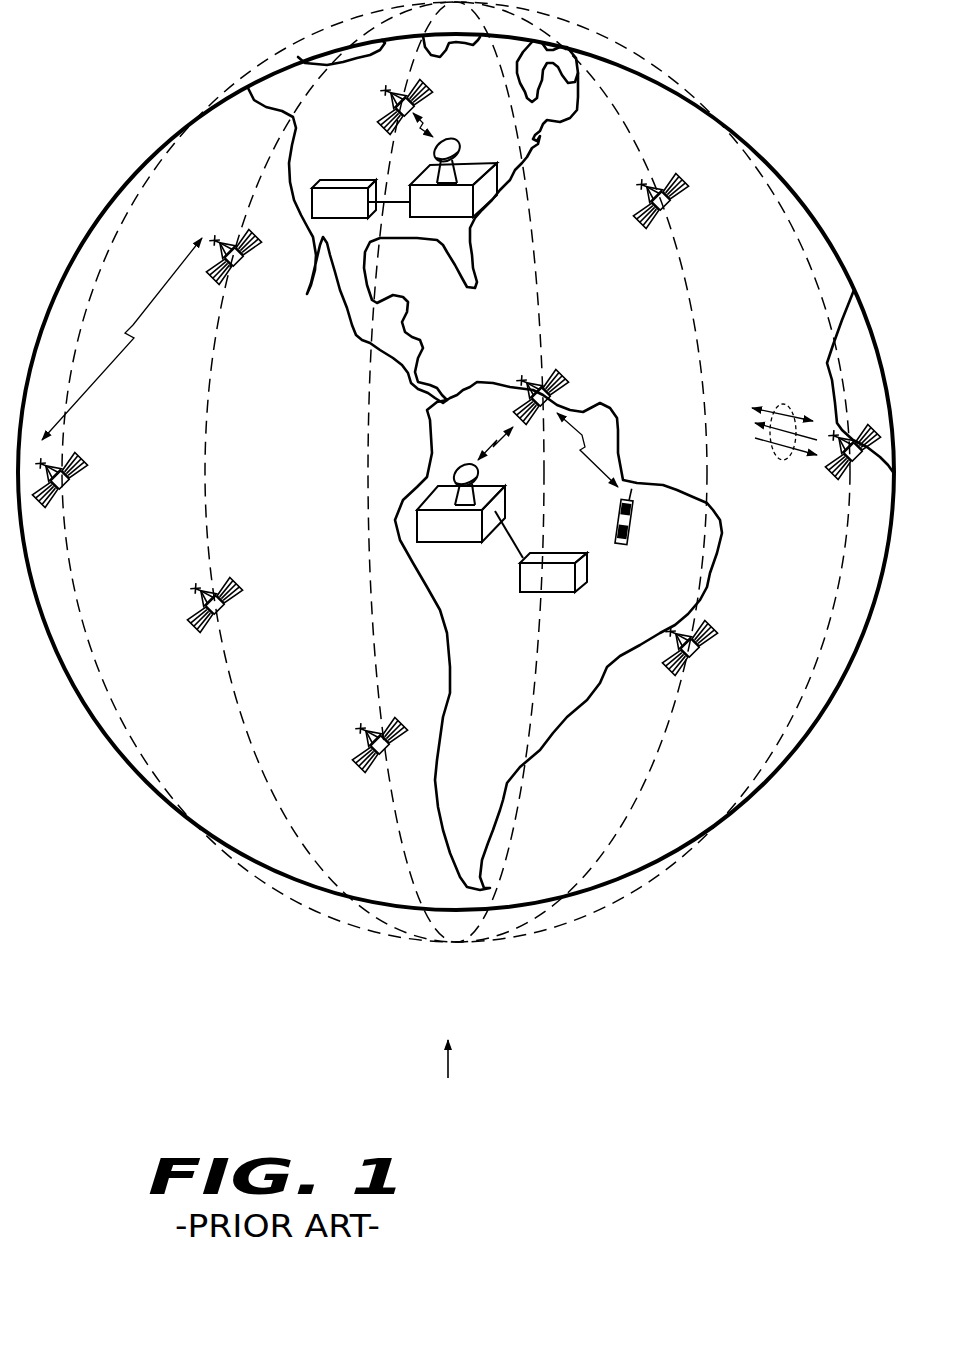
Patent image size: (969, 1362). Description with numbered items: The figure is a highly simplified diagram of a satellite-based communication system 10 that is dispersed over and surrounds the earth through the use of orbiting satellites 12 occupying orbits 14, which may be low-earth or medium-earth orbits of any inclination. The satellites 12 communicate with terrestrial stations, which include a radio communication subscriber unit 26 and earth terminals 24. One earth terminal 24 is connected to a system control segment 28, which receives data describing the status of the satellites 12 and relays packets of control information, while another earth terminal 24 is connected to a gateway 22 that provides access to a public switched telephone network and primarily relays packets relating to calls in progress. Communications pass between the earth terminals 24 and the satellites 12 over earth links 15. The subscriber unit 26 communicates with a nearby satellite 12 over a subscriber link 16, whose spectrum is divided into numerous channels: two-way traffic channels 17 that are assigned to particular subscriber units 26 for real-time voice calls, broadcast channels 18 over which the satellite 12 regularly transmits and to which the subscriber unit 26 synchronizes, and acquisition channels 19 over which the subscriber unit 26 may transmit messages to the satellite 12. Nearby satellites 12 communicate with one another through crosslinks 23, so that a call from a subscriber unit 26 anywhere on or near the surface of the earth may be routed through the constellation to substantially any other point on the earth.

The satellite-based communication system 10 is at (450, 1078).
The satellite 12 is at (385, 131).
The orbit 14 is at (265, 173).
The earth link 15 is at (492, 440).
The subscriber link 16 is at (600, 417).
The traffic channel 17 is at (774, 402).
The broadcast channel 18 is at (757, 421).
The acquisition channel 19 is at (774, 453).
The gateway 22 is at (557, 593).
The crosslink 23 is at (138, 340).
The earth terminal 24 is at (477, 160).
The subscriber unit 26 is at (633, 538).
The system control segment 28 is at (323, 219).